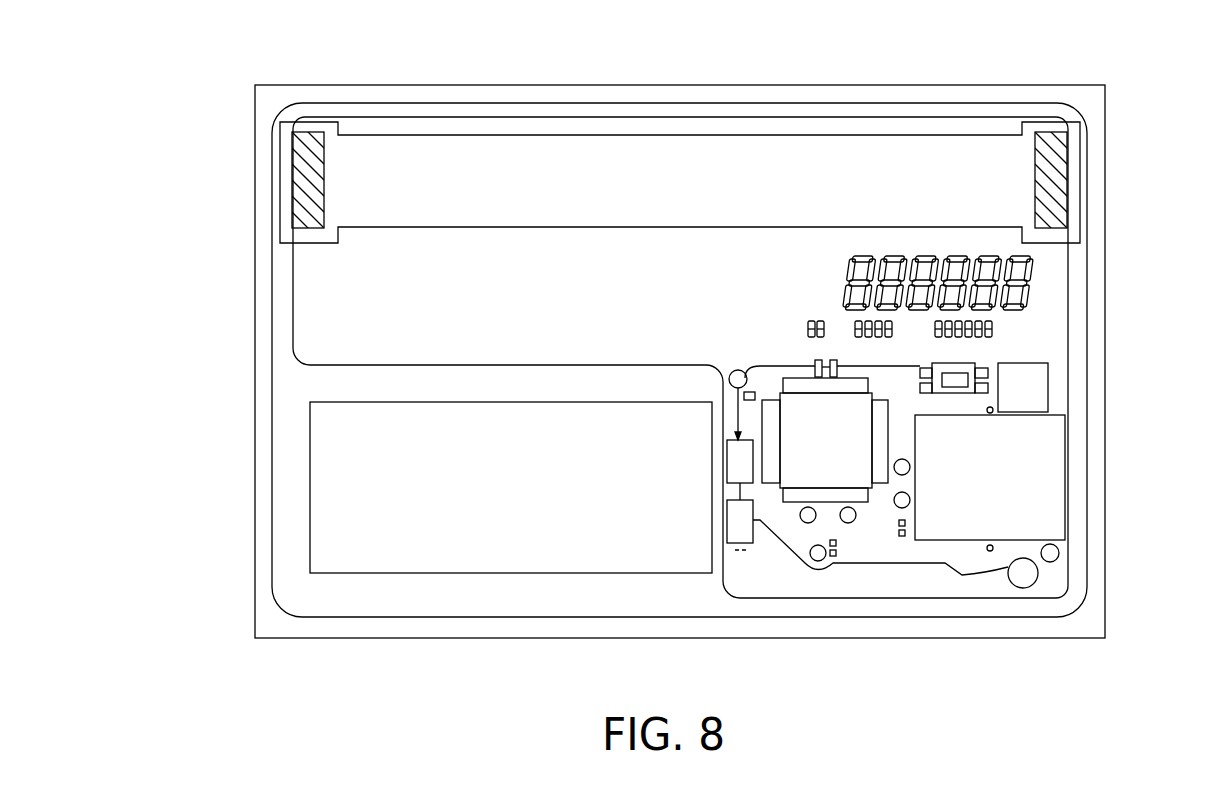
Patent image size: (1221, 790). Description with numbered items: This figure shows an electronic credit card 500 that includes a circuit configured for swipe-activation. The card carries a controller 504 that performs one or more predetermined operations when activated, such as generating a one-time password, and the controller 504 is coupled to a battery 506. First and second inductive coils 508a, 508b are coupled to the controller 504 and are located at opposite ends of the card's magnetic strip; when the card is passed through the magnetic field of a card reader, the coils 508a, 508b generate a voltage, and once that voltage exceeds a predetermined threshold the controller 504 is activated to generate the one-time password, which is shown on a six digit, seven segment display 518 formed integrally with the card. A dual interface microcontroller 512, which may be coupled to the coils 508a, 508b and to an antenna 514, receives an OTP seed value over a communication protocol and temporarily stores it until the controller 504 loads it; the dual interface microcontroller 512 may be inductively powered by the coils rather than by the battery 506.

The electronic credit card 500 is at (967, 84).
The controller 504 is at (832, 497).
The battery 506 is at (520, 495).
The first inductive coil 508a is at (1067, 150).
The second inductive coil 508b is at (292, 172).
The dual interface microcontroller 512 is at (1050, 380).
The antenna 514 is at (417, 120).
The six digit, seven segment display 518 is at (1035, 289).